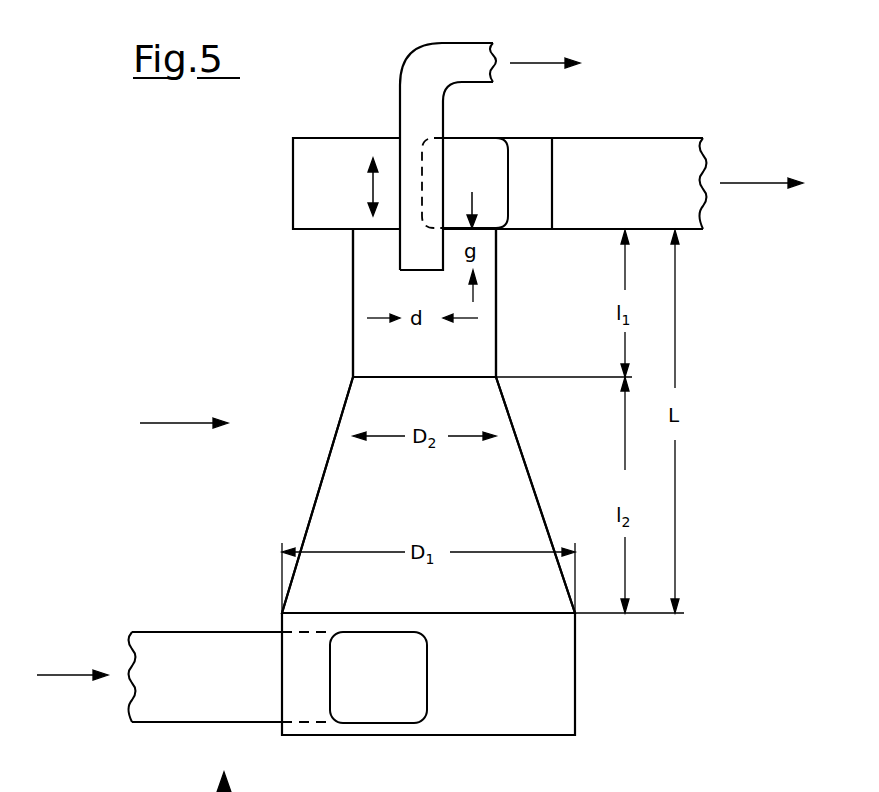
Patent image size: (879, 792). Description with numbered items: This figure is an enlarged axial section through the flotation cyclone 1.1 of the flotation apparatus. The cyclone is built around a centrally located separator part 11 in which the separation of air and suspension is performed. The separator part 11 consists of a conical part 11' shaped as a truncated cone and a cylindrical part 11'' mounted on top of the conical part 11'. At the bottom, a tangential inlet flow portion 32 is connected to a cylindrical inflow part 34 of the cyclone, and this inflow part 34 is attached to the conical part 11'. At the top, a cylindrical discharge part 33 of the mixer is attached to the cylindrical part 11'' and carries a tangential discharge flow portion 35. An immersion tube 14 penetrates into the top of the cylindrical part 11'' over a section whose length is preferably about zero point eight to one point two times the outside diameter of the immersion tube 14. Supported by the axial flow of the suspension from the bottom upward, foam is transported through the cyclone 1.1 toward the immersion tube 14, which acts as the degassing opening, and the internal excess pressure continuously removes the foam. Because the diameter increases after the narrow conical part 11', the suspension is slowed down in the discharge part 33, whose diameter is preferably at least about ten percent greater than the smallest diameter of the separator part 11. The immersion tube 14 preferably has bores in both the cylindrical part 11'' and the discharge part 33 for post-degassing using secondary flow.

The immersion tube 14 is at (457, 57).
The discharge part 33 is at (335, 150).
The tangential discharge flow portion 35 is at (611, 155).
The separator part 11 is at (378, 421).
The cylindrical part 11'' is at (390, 303).
The conical part 11' is at (419, 495).
The flotation cyclone 1.1 is at (160, 426).
The cylindrical inflow part 34 is at (518, 722).
The tangential inlet flow portion 32 is at (187, 644).